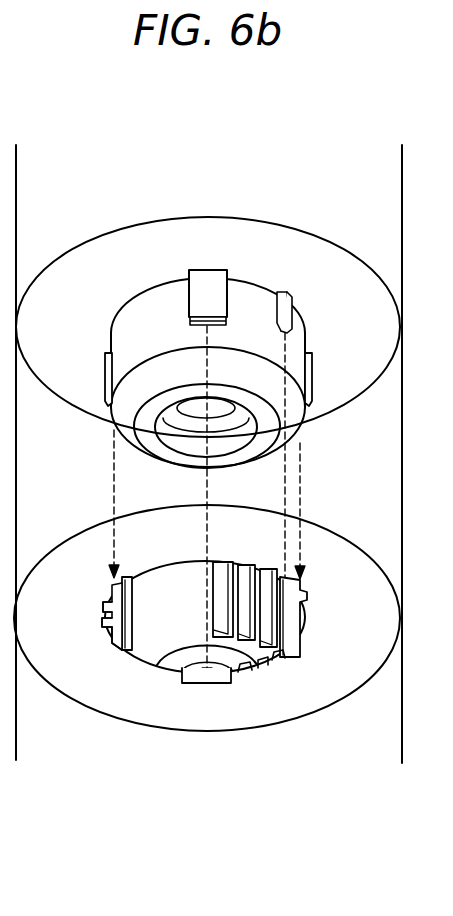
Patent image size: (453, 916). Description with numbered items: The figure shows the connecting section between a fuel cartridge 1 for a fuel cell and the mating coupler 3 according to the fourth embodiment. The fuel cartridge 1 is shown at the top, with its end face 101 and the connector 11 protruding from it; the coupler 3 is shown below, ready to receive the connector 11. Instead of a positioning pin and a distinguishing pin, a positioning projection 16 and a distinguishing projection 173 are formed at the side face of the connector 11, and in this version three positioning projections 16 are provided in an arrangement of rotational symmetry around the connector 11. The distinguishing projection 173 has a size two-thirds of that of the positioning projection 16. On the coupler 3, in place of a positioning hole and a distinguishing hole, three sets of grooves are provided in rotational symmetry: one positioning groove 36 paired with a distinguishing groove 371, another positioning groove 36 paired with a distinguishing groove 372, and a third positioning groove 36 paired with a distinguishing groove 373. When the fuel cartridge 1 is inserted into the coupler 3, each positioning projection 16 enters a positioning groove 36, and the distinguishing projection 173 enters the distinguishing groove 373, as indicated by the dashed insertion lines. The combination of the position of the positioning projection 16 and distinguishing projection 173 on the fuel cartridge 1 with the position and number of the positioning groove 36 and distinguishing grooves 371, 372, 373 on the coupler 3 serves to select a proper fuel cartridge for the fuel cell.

The fuel cartridge 1 is at (335, 153).
The coupler 3 is at (77, 748).
The connector 11 is at (152, 295).
The positioning projection 16 is at (206, 280).
The positioning groove 36 is at (108, 588).
The end face 101 is at (145, 237).
The distinguishing projection 173 is at (287, 296).
The distinguishing groove 371 is at (279, 570).
The distinguishing groove 372 is at (248, 563).
The distinguishing groove 373 is at (230, 560).